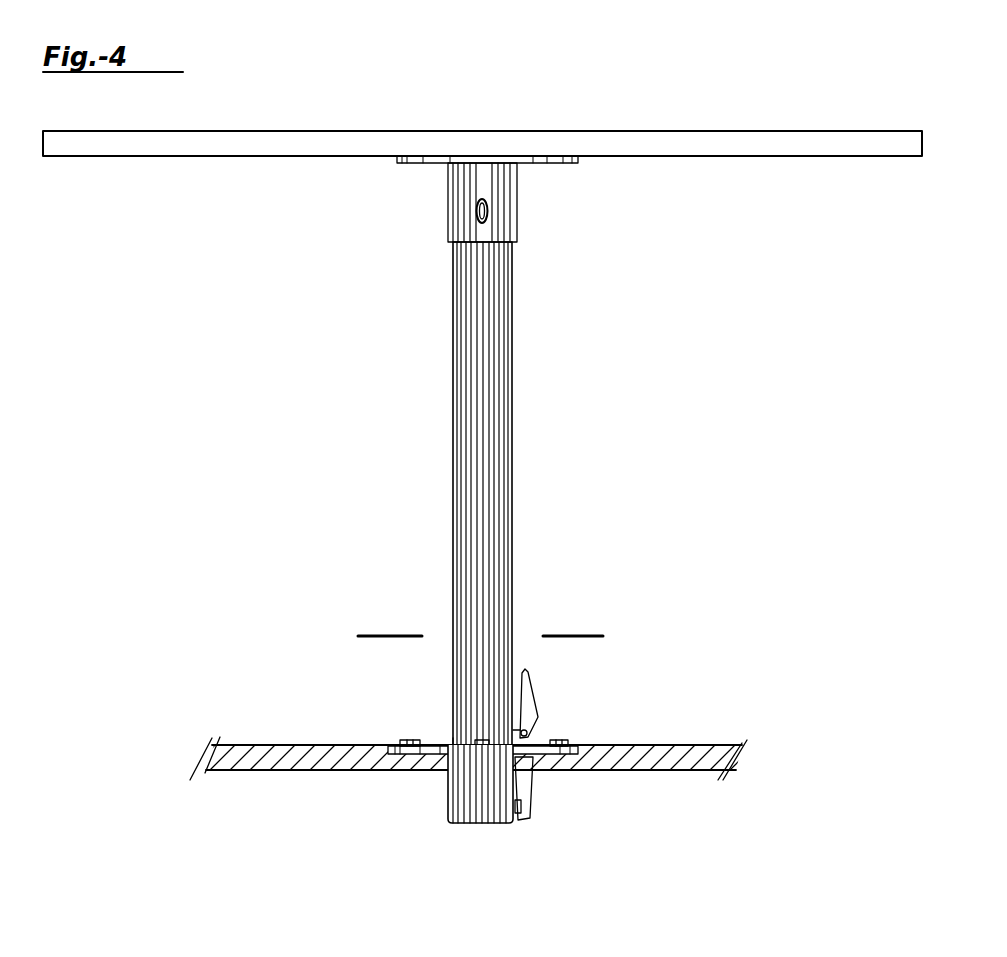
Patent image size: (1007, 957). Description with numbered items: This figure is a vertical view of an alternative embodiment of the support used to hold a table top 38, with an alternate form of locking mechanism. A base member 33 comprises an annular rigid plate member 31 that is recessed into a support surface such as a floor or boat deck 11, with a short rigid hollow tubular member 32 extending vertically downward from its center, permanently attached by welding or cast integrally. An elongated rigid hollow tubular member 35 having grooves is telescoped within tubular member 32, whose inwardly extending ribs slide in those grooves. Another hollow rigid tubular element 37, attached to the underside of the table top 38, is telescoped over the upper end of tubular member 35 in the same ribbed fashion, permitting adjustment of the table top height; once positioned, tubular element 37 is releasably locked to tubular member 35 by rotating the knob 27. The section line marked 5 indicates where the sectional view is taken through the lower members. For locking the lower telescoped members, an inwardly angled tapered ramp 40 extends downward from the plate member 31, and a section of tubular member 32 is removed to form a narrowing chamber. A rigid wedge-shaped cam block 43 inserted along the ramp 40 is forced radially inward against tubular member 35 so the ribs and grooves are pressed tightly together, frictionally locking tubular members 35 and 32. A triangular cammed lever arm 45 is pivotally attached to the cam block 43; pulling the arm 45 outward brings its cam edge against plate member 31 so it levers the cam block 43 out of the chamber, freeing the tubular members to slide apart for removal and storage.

The table top 38 is at (603, 131).
The hollow rigid tubular element 37 is at (447, 230).
The knob 27 is at (488, 210).
The elongated rigid hollow tubular member 35 is at (455, 435).
The section line 5- 5 is at (367, 628).
The floor or boat deck 11 is at (285, 745).
The annular rigid plate member 31 is at (432, 745).
The base member 33 is at (441, 730).
The cammed lever arm 45 is at (524, 668).
The rigid hollow tubular member 32 is at (447, 802).
The tapered ramp 40 is at (530, 807).
The cam block 43 is at (533, 770).